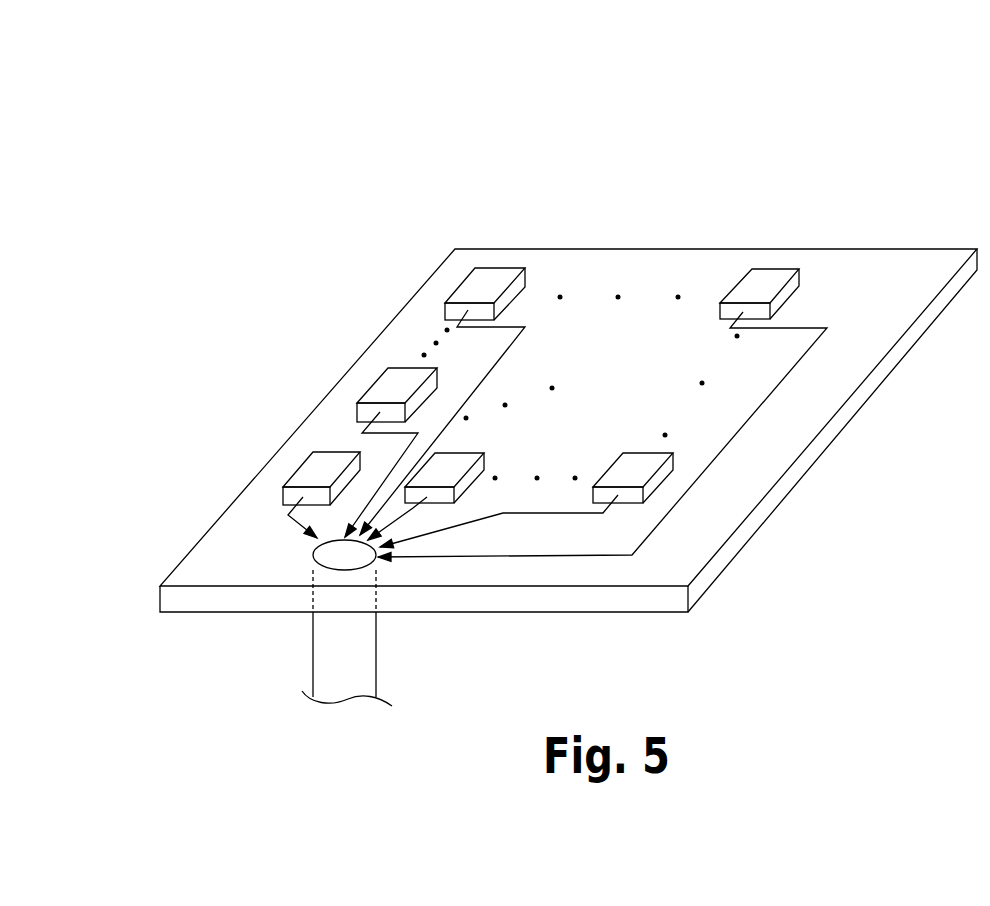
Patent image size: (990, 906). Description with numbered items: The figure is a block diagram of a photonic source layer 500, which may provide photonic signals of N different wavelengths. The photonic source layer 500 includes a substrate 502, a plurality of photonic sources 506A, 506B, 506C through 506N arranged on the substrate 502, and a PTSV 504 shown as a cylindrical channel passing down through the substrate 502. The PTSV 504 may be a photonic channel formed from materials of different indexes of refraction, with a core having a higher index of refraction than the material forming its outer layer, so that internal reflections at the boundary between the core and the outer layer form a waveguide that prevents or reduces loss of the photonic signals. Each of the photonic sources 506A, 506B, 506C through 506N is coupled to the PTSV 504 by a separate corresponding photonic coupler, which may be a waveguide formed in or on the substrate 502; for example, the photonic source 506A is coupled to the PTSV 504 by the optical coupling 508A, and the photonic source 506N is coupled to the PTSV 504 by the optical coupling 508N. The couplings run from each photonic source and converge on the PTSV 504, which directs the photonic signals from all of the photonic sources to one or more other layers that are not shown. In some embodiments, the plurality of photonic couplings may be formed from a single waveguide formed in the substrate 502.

The photonic source layer 500 is at (731, 90).
The substrate 502 is at (893, 372).
The PTSV 504 is at (313, 653).
The photonic source 506A is at (305, 462).
The photonic source 506B is at (379, 377).
The photonic source 506C is at (505, 267).
The photonic source 506N is at (775, 268).
The optical coupling 508A is at (298, 528).
The optical coupling 508N is at (665, 515).